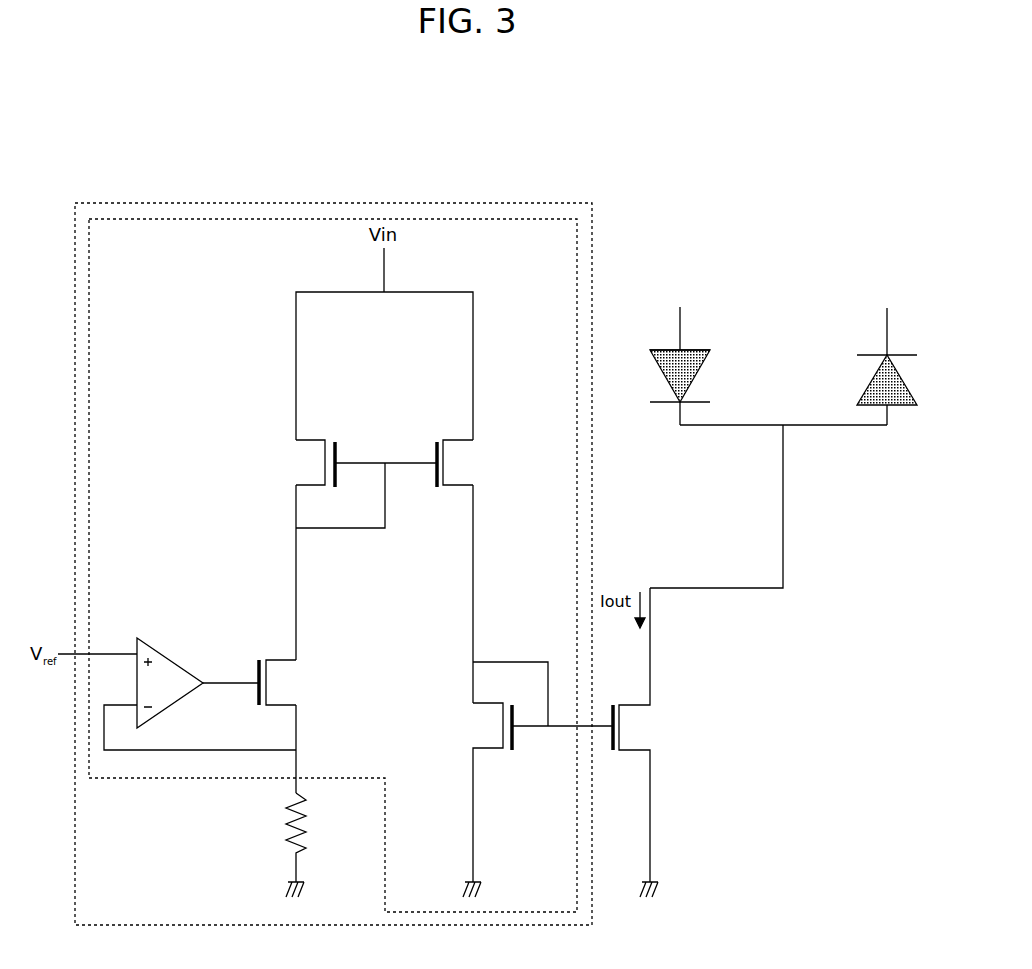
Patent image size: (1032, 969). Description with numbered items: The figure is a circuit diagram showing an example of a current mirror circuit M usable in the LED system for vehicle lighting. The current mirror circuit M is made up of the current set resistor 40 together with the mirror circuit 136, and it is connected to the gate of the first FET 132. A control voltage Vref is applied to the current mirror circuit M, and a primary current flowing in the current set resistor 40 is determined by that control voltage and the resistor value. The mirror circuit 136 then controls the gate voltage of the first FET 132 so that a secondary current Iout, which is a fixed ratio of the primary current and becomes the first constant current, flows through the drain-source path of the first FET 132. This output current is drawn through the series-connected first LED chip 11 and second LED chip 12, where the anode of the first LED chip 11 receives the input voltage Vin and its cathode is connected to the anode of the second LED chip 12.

The first LED chip 11 is at (703, 342).
The second LED chip 12 is at (867, 348).
The current set resistor 40 is at (318, 829).
The first FET 132 is at (648, 733).
The mirror circuit 136 is at (483, 218).
The current mirror circuit M is at (163, 202).